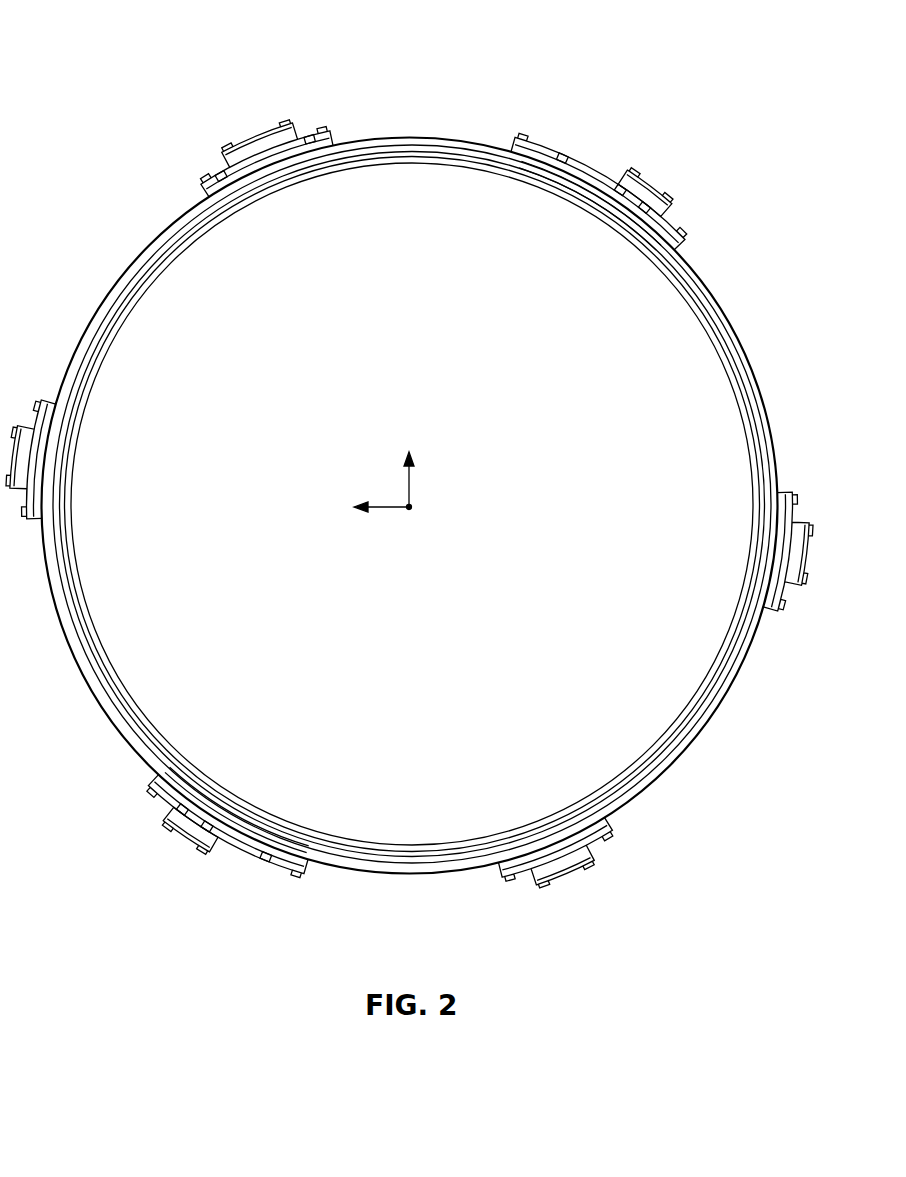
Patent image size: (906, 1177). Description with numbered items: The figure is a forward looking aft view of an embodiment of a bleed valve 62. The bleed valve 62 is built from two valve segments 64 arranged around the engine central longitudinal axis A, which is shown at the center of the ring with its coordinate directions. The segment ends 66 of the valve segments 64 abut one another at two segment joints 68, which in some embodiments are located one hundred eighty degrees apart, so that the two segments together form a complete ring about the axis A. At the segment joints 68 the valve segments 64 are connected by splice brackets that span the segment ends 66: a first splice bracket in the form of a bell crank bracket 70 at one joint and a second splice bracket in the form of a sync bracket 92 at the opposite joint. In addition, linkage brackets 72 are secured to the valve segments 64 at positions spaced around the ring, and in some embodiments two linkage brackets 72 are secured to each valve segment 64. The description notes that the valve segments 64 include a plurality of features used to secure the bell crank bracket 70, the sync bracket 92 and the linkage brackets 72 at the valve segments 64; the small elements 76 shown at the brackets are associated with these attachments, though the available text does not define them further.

The bleed valve 62 is at (117, 43).
The valve segments 64 is at (138, 300).
The segment ends 66 is at (612, 202).
The segment joints 68 is at (578, 168).
The bell crank bracket 70 is at (638, 175).
The linkage brackets 72 is at (268, 142).
The fastener tabs 76 is at (290, 148).
The sync bracket 92 is at (150, 820).
The engine central longitudinal axis A is at (412, 488).